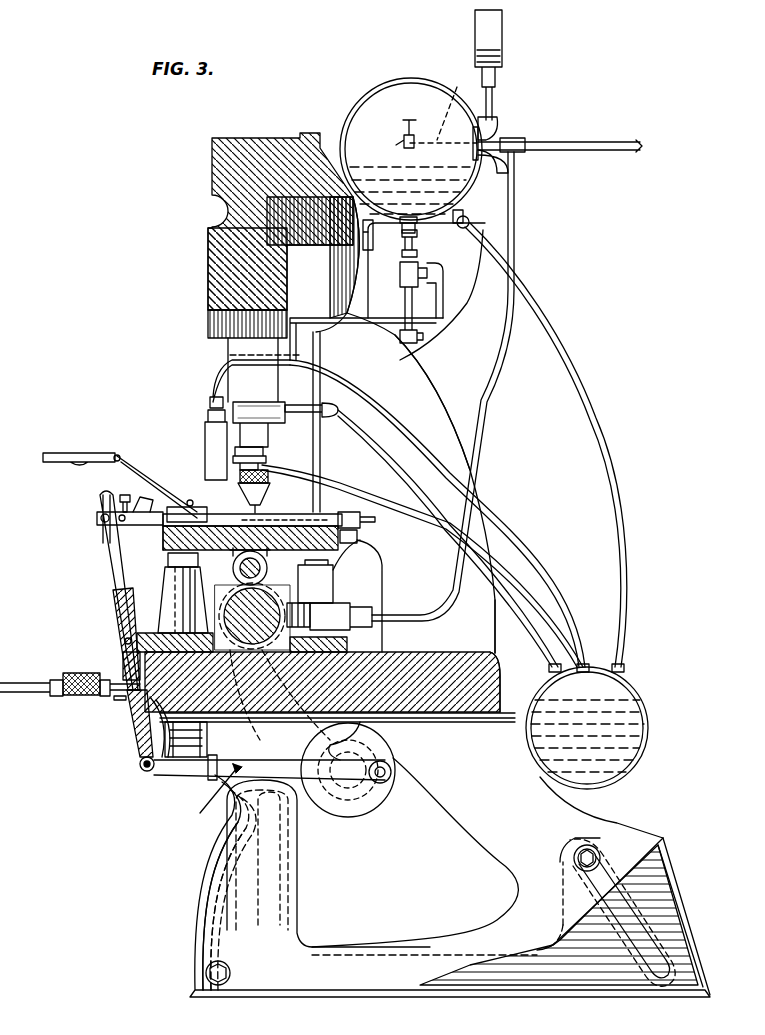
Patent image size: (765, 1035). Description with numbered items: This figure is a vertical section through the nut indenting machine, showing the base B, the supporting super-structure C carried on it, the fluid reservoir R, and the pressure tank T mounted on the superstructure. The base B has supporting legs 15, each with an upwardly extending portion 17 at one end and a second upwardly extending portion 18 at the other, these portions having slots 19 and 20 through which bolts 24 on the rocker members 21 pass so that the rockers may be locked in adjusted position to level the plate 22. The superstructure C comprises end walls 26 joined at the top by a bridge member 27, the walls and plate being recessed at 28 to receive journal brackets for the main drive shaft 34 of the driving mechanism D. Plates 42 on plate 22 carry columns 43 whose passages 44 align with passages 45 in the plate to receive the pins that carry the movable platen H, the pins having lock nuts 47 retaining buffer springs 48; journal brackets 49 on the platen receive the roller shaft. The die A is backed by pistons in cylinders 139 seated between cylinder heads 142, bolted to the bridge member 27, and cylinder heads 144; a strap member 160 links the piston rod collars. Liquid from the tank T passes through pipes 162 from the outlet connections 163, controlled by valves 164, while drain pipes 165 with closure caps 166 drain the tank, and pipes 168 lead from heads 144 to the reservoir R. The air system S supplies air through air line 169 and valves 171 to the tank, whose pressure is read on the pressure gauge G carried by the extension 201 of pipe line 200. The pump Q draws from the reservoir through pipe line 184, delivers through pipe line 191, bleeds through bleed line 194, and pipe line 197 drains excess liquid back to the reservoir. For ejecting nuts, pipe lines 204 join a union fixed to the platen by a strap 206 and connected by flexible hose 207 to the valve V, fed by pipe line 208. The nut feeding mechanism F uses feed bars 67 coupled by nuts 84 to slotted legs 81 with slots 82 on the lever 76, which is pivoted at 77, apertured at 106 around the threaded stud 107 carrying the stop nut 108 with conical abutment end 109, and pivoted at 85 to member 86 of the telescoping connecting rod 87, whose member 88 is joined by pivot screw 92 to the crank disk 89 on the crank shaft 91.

The bridge member 27 is at (222, 153).
The supporting super-structure C is at (208, 197).
The pipes 162 is at (347, 303).
The cylinder heads 142 is at (210, 310).
The cylinders 139 is at (227, 341).
The cylinder heads 144 is at (300, 395).
The liquid pump Q is at (200, 436).
The strap member 160 is at (265, 462).
The anvil or die A is at (268, 482).
The pipe lines 204 is at (272, 494).
The pressure tank T is at (394, 92).
The valves 171 is at (400, 138).
The upwardly extending portion 18 is at (378, 150).
The air line 169 is at (455, 82).
The pressure gauge G is at (500, 43).
The pipe line 200 is at (486, 128).
The upwardly extending extension 201 is at (494, 112).
The air system S is at (574, 140).
The pipe line 208 is at (520, 233).
The outlet connections 163 is at (400, 268).
The valves 164 is at (420, 255).
The drain pipes 165 is at (420, 302).
The closure caps 166 is at (420, 347).
The pipe line 197 is at (528, 326).
The pipe line 191 is at (478, 343).
The end walls 26 is at (433, 400).
The journal brackets 49 is at (252, 532).
The strap 206 is at (350, 513).
The bleed line 194 is at (408, 497).
The flexible hose 207 is at (372, 540).
The driving mechanism D is at (228, 598).
The main drive shaft 34 is at (261, 648).
The recess 28 is at (315, 581).
The valve V is at (343, 615).
The plates 42 is at (350, 651).
The plate 22 is at (500, 676).
The columns 43 is at (163, 590).
The passages 44 is at (170, 558).
The movable platen H is at (158, 541).
The nut feeding mechanism F is at (95, 448).
The legs 81 is at (105, 562).
The slots 82 is at (105, 497).
The nut feed bars 67 is at (90, 520).
The nuts 84 is at (104, 524).
The lever 76 is at (114, 608).
The pivot 77 is at (125, 641).
The aperture 106 is at (124, 676).
The stop nut 108 is at (63, 672).
The threaded stud 107 is at (31, 686).
The conical abutment end 109 is at (102, 700).
The passages 45 is at (133, 703).
The pivot 85 is at (140, 764).
The lock nuts 47 is at (160, 780).
The buffer springs 48 is at (256, 730).
The member 86 is at (178, 770).
The member 88 is at (285, 742).
The crank disk 89 is at (385, 745).
The pivot screw 92 is at (393, 772).
The telescoping connecting rod 87 is at (211, 801).
The crank shaft 91 is at (345, 805).
The base B is at (190, 912).
The upwardly extending portion 17 is at (218, 868).
The slot 19 is at (218, 896).
The rocker members 21 is at (463, 813).
The bolts 24 is at (216, 987).
The supporting legs 15 is at (648, 930).
The slot 20 is at (645, 950).
The fluid reservoir R is at (638, 713).
The pipe line 184 is at (505, 523).
The pipes 168 is at (468, 545).